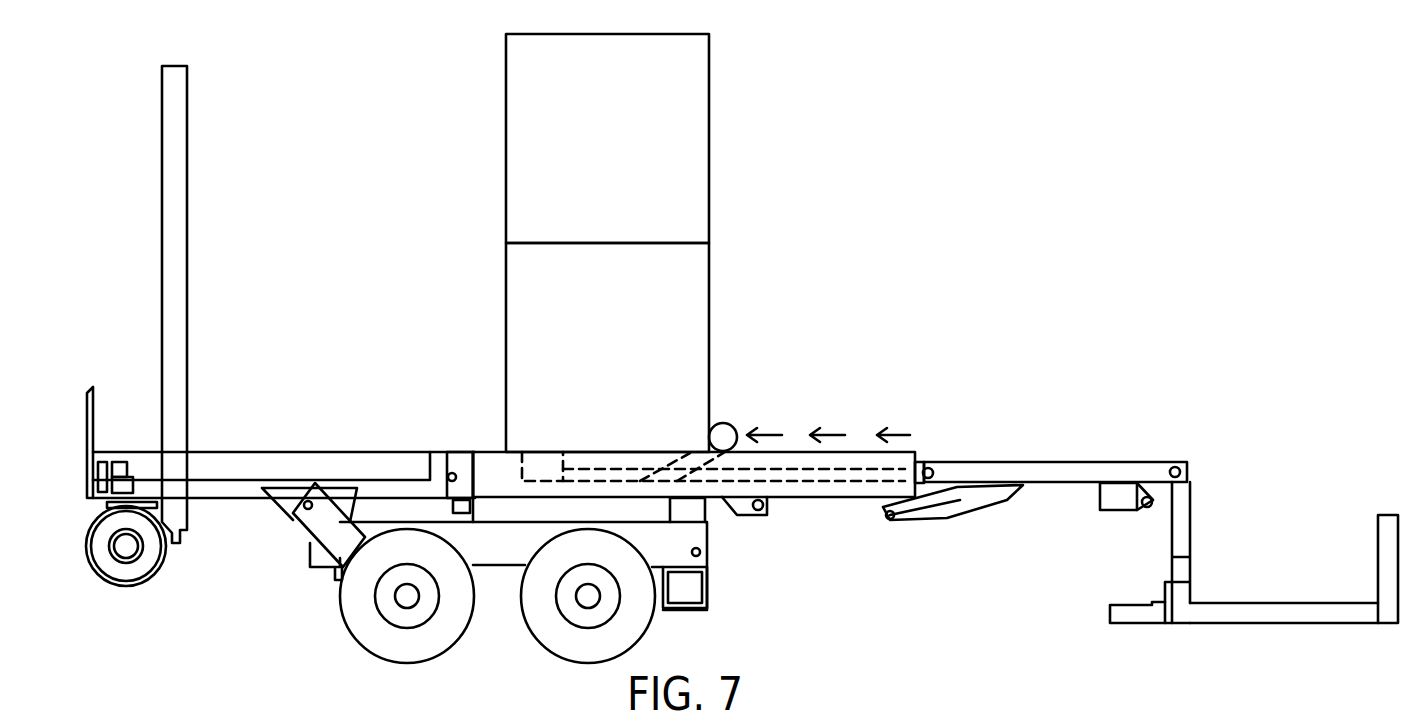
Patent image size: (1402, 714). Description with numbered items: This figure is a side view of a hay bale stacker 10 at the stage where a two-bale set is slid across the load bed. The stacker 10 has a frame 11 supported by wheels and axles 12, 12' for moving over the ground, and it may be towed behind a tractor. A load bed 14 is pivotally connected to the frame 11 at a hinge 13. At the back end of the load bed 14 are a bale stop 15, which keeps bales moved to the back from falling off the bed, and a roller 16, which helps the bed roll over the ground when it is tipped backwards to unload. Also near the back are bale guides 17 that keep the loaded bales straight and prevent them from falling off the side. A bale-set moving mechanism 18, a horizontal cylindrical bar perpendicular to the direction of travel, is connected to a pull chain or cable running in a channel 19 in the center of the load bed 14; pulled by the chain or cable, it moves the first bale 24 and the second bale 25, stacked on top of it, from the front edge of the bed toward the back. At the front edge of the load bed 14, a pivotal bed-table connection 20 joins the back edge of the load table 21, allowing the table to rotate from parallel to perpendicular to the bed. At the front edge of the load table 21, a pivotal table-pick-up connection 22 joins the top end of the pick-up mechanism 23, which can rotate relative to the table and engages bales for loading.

The hay bale stacker 10 is at (364, 240).
The frame 11 is at (703, 540).
The wheels and axles 12 is at (423, 602).
The wheels and axles 12' is at (611, 600).
The hinge 13 is at (312, 524).
The load bed 14 is at (234, 468).
The bale stop 15 is at (93, 418).
The roller 16 is at (148, 562).
The bale guides 17 is at (187, 128).
The bale-set moving mechanism 18 is at (725, 428).
The channel 19 is at (852, 470).
The pivotal bed-table connection 20 is at (931, 468).
The load table 21 is at (1033, 462).
The pivotal table-pick-up connection 22 is at (1185, 468).
The pick-up mechanism 23 is at (1380, 528).
The first bale 24 is at (614, 318).
The second bale 25 is at (604, 143).